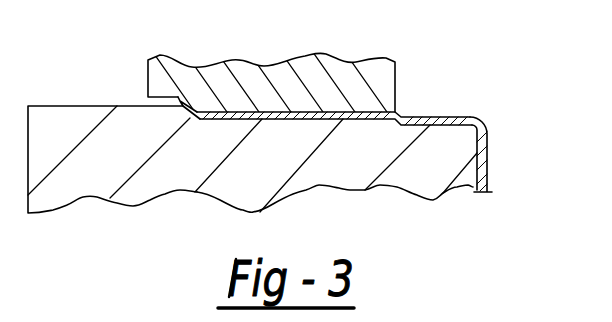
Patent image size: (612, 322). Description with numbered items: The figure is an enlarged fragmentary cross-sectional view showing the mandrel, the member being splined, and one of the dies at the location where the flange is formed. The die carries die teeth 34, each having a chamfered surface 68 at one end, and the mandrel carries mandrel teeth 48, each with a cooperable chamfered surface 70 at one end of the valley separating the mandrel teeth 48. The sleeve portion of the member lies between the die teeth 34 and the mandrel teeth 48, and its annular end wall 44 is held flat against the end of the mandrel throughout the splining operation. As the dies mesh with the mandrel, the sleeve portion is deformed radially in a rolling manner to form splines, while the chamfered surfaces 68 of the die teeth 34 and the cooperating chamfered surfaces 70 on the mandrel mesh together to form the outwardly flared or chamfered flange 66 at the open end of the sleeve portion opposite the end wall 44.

The die teeth 34 is at (332, 79).
The end wall 44 is at (487, 151).
The mandrel teeth 48 is at (313, 120).
The flange 66 is at (186, 112).
The chamfered surface 68 is at (182, 106).
The chamfered surface 70 is at (198, 121).